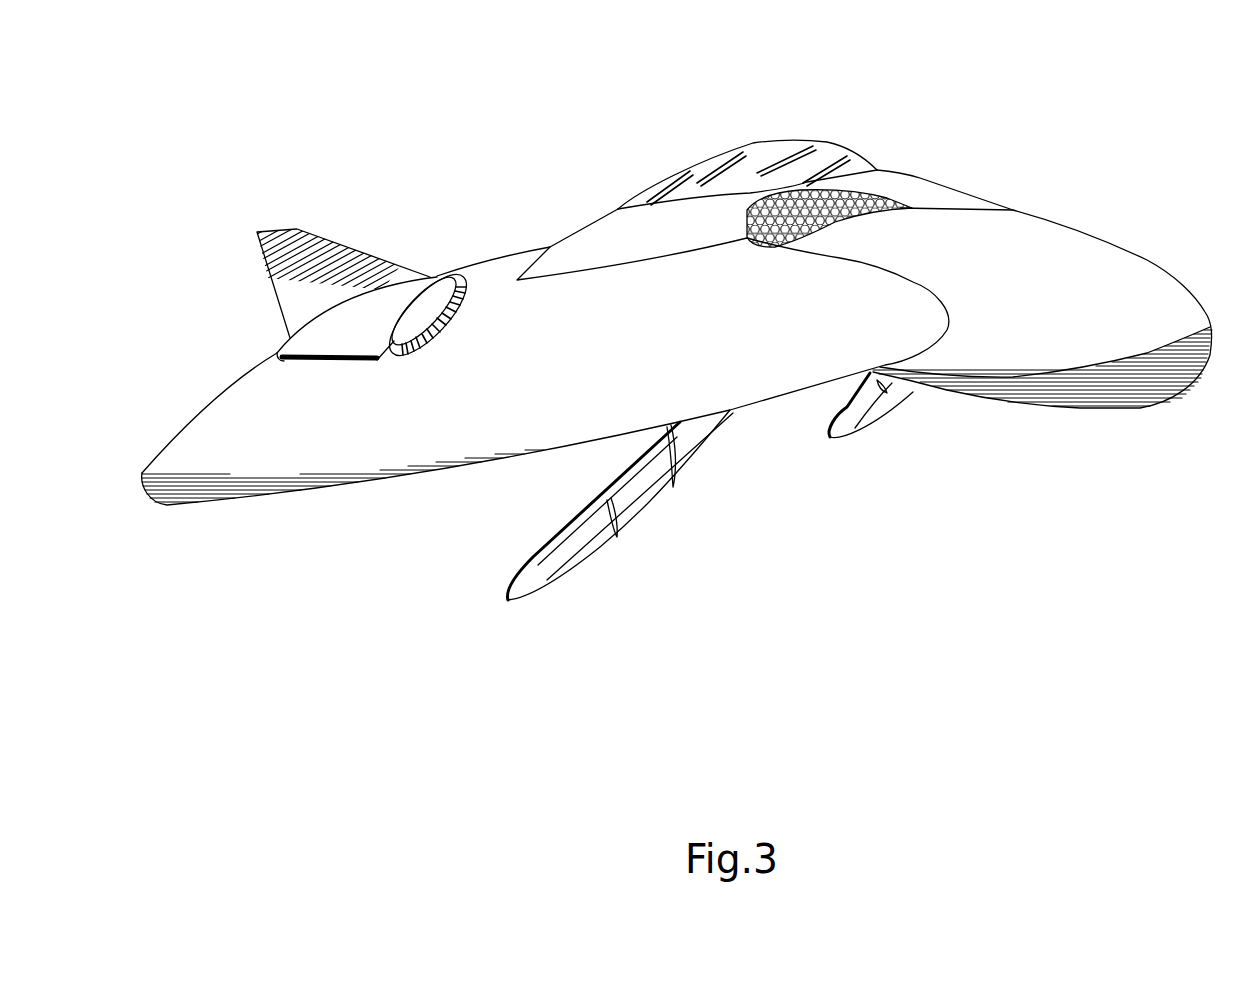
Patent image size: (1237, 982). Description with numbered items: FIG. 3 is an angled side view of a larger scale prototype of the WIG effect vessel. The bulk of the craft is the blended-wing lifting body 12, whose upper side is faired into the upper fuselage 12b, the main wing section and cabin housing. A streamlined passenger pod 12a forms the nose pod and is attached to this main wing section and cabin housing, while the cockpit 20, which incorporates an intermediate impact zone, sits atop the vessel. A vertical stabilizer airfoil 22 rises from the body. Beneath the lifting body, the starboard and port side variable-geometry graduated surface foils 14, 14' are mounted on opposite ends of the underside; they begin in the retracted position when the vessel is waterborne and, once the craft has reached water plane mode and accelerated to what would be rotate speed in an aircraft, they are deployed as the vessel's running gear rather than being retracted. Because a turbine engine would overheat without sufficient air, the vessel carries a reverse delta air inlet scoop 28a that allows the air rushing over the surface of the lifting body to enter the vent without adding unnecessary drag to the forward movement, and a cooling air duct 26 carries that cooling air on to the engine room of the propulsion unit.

The blended-wing lifting body 12 is at (681, 330).
The passenger pod 12a is at (1054, 330).
The upper fuselage 12b is at (684, 248).
The starboard side variable-geometry graduated surface foil 14 is at (564, 584).
The port side variable-geometry graduated surface foil 14' is at (820, 481).
The cockpit with intermediate impact zone 20 is at (792, 147).
The vertical stabilizer airfoil 22 is at (340, 242).
The cooling air duct 26 is at (352, 330).
The air inlet scoop 28a is at (453, 280).